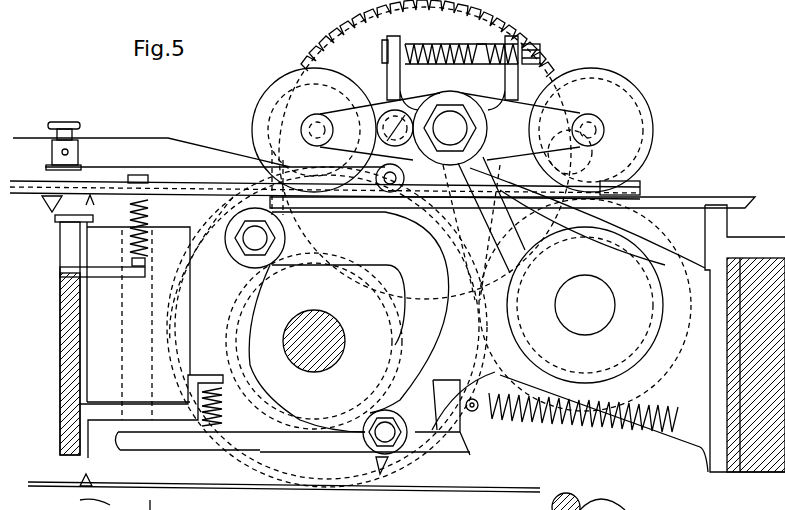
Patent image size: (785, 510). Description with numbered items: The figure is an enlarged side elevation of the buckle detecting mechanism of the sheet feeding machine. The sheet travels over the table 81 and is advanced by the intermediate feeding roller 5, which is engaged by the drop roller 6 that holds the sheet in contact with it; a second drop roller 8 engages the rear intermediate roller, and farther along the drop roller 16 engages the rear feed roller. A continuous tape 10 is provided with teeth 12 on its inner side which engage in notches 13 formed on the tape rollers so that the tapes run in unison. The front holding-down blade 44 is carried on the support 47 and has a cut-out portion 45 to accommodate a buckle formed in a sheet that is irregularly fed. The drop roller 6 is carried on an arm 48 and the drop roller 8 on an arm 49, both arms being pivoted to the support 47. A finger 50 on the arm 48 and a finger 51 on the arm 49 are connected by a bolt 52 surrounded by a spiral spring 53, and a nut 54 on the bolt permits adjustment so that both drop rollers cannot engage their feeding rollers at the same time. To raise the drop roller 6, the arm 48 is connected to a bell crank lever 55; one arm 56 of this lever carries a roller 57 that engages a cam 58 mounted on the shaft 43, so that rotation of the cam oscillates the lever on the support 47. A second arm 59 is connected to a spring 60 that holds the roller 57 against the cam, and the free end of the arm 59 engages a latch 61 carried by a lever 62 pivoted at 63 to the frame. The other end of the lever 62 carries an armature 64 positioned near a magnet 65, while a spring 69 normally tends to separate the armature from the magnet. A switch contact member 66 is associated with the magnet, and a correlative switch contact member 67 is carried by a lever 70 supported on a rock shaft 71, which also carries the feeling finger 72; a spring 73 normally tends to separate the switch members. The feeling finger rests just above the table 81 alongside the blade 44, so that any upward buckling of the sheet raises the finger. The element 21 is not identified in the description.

The intermediate feeding roller 5 is at (656, 242).
The drop roller 6 is at (593, 130).
The drop roller 8 is at (268, 96).
The tape 10 is at (230, 498).
The teeth 12 is at (90, 485).
The notches 13 is at (383, 490).
The drop roller 16 is at (170, 148).
The shaft 21 is at (585, 305).
The shaft 43 is at (318, 312).
The front holding-down blade 44 is at (642, 178).
The cut-out portion 45 is at (482, 215).
The support 47 is at (450, 128).
The arm 48 is at (572, 130).
The arm 49 is at (330, 130).
The finger 50 is at (518, 72).
The finger 51 is at (392, 80).
The bolt 52 is at (443, 43).
The spiral spring 53 is at (452, 64).
The nut 54 is at (530, 43).
The bell crank lever 55 is at (324, 334).
The arm 56 is at (338, 278).
The roller 57 is at (248, 251).
The cam 58 is at (262, 313).
The second arm 59 is at (480, 413).
The spring 60 is at (583, 420).
The latch 61 is at (455, 455).
The lever 62 is at (311, 445).
The pivot 63 is at (391, 421).
The armature 64 is at (140, 440).
The magnet 65 is at (141, 340).
The switch contact member 66 is at (60, 223).
The switch contact member 67 is at (47, 195).
The spring 69 is at (223, 412).
The lever 70 is at (325, 182).
The rock shaft 71 is at (375, 178).
The feeling finger 72 is at (569, 154).
The spring 73 is at (152, 208).
The table 81 is at (656, 197).